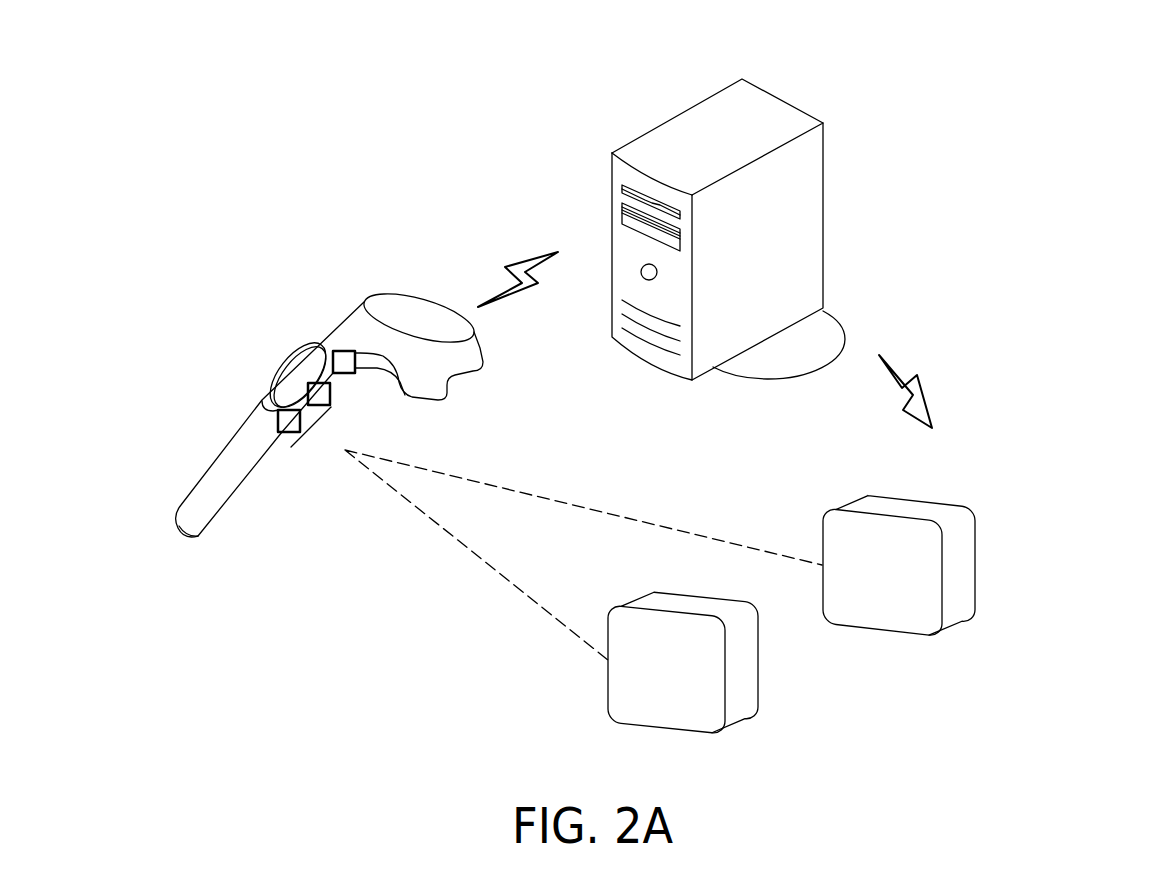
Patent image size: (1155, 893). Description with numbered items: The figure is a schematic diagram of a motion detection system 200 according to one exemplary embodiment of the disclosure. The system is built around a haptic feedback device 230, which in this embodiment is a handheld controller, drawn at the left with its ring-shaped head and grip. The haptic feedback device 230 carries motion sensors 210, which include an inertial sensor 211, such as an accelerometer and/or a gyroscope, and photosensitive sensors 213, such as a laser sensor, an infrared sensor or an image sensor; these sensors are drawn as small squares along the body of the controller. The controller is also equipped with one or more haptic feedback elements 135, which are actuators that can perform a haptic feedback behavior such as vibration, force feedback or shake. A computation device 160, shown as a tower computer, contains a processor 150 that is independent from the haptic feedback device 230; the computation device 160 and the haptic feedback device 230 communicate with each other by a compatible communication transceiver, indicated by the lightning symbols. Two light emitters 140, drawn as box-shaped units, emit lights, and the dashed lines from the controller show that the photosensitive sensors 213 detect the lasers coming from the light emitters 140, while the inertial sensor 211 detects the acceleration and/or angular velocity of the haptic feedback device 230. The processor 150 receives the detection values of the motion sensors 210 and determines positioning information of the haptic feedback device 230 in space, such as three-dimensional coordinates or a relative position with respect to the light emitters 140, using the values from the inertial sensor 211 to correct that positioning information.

The motion detection system 200 is at (1129, 752).
The haptic feedback device 230 is at (418, 305).
The motion sensors 210 is at (329, 462).
The inertial sensor 211 is at (288, 433).
The photosensitive sensors 213 is at (318, 406).
The haptic feedback elements 135 is at (345, 375).
The processor 150 is at (685, 227).
The computation device 160 is at (617, 203).
The light emitters 140 is at (757, 648).